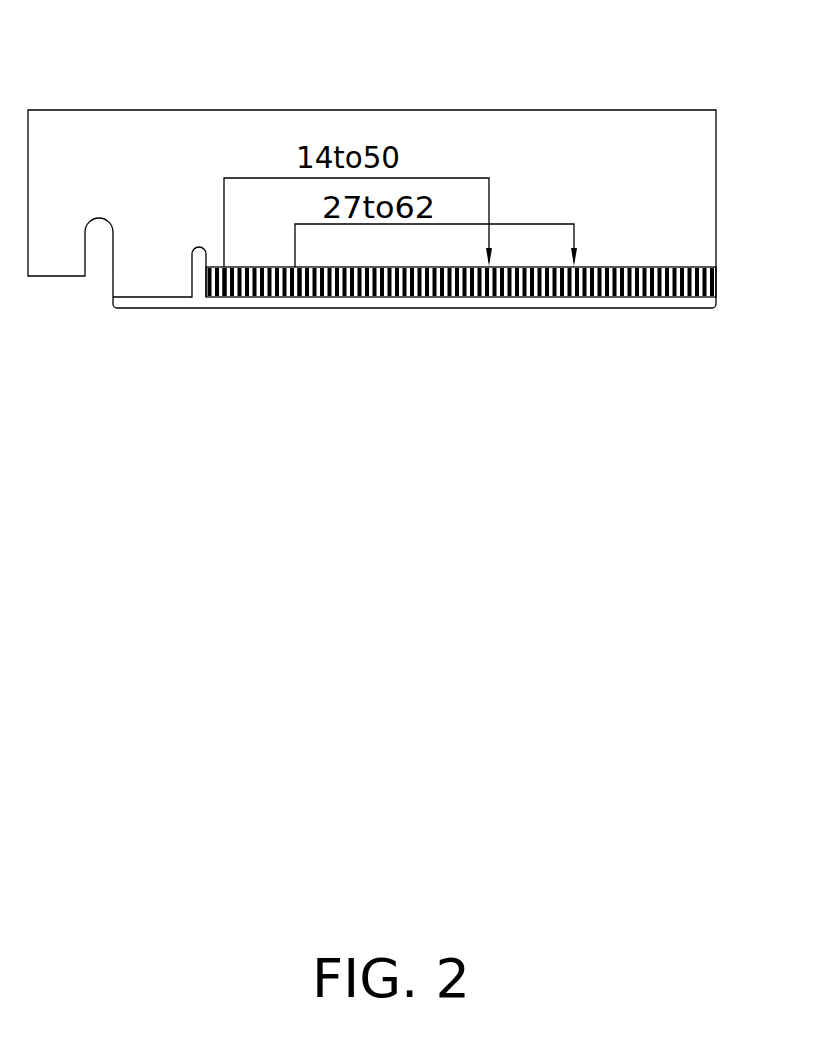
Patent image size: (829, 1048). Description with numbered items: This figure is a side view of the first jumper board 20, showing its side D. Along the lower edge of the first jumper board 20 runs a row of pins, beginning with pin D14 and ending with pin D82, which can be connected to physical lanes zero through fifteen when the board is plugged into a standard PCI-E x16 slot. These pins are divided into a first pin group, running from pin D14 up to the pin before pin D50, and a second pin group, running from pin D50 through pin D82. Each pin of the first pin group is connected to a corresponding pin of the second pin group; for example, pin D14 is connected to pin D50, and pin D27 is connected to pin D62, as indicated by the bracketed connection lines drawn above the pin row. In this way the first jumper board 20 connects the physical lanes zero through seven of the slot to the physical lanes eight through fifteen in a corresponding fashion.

The first jumper board 20 is at (133, 147).
The pin D14 is at (225, 298).
The pin D27 is at (297, 298).
The pin D50 is at (483, 297).
The pin D62 is at (573, 297).
The pin D82 is at (716, 290).